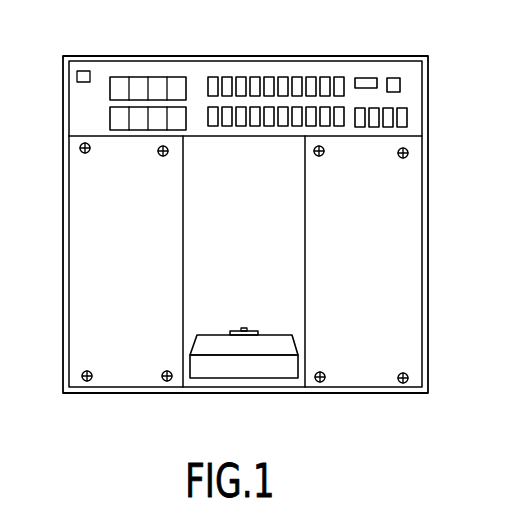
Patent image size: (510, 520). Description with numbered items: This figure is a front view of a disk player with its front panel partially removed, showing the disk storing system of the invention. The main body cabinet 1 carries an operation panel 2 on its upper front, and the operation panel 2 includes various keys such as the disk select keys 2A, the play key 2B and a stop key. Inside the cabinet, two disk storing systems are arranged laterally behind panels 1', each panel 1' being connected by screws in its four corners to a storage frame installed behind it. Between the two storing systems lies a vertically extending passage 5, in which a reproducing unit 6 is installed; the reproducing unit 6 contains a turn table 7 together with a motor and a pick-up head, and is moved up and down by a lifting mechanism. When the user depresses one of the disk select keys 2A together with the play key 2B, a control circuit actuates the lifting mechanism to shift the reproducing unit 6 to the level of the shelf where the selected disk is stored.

The main body cabinet 1 is at (222, 224).
The panel 1' is at (257, 261).
The operation panel 2 is at (100, 66).
The disk select keys 2A is at (272, 85).
The play key 2B is at (118, 83).
The vertically extending passage 5 is at (293, 225).
The reproducing unit 6 is at (267, 360).
The turn table 7 is at (260, 330).